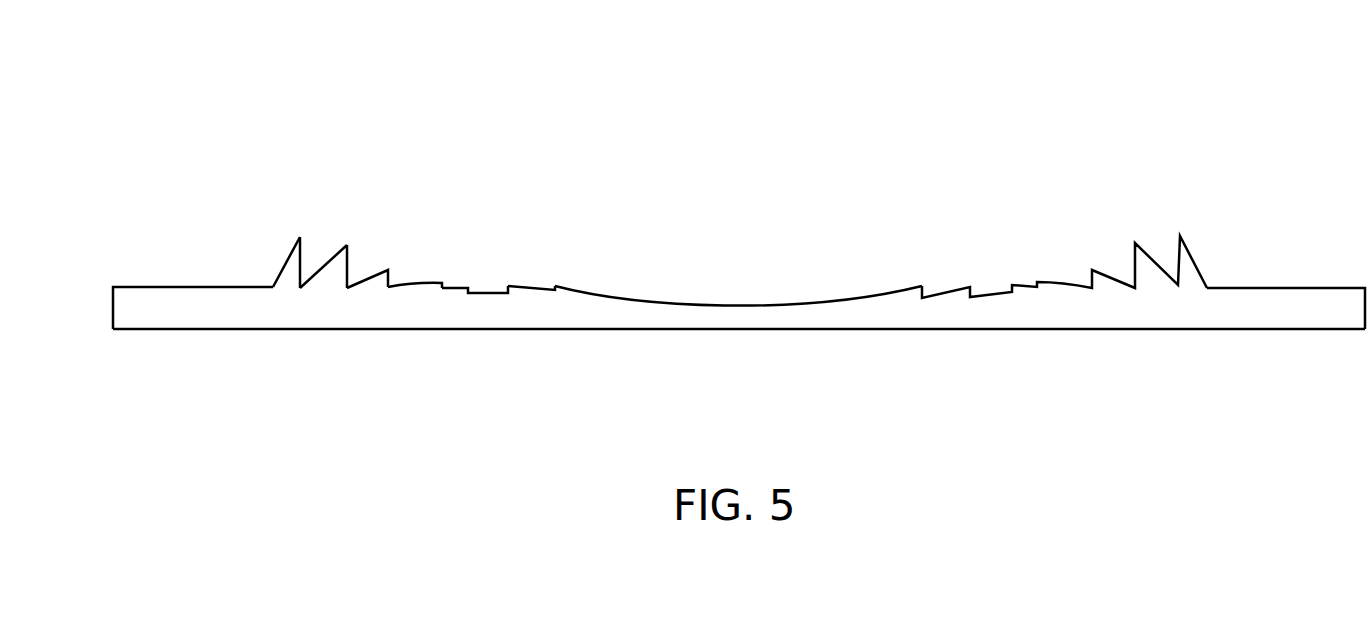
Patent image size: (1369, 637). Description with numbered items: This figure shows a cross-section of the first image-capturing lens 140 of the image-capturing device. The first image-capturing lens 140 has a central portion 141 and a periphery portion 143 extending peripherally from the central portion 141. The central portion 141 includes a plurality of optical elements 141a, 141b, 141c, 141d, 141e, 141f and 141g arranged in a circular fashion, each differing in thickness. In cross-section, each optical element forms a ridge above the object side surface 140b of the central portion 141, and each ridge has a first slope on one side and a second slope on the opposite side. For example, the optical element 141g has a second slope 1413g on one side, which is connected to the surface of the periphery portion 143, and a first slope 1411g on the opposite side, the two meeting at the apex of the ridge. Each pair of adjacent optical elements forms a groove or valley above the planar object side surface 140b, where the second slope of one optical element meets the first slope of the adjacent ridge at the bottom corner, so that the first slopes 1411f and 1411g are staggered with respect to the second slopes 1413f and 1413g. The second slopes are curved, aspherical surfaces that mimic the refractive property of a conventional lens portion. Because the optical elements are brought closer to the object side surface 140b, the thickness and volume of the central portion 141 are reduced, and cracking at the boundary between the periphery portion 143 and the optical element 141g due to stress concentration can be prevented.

The first image-capturing lens 140 is at (160, 117).
The object side surface 140b is at (1113, 330).
The central portion 141 is at (684, 314).
The optical element 141a is at (585, 302).
The optical element 141b is at (527, 300).
The optical element 141c is at (487, 300).
The optical element 141d is at (428, 297).
The optical element 141e is at (372, 273).
The optical element 141f is at (366, 343).
The optical element 141g is at (240, 309).
The first slope 1411f is at (343, 285).
The first slope 1411g is at (295, 288).
The second slope 1413f is at (320, 285).
The second slope 1413g is at (283, 285).
The periphery portion 143 is at (155, 302).